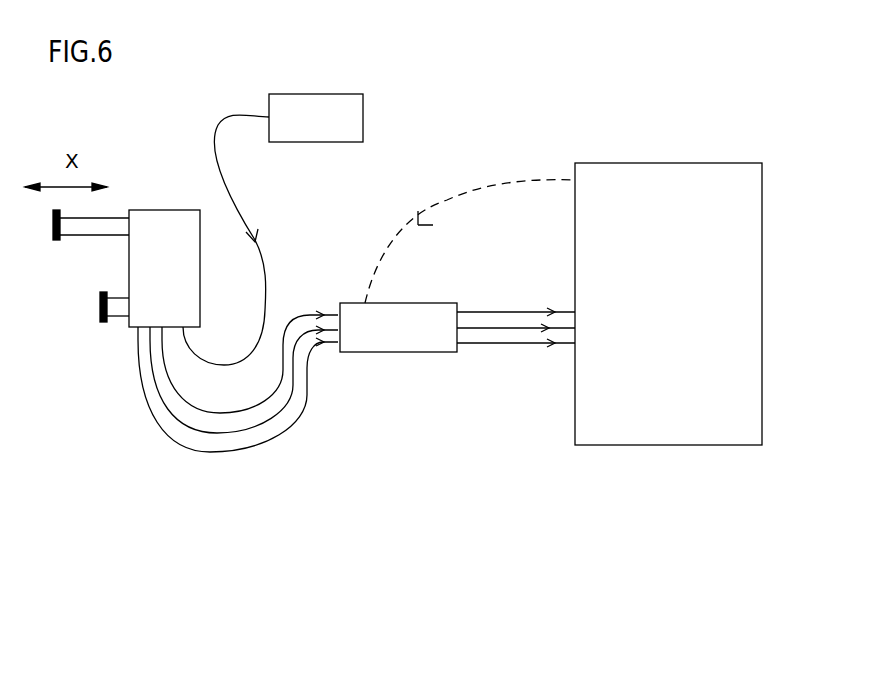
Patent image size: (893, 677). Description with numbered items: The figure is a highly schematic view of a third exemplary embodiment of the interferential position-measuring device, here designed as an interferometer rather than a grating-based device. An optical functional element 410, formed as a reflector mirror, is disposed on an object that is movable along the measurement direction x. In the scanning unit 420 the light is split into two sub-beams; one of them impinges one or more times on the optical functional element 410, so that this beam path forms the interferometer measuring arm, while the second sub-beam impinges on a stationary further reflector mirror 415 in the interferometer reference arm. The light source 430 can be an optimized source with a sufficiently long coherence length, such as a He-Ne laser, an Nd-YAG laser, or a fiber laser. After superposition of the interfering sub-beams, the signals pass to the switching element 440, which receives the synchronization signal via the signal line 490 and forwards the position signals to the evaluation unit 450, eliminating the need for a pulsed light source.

The optical functional element 410 is at (53, 240).
The further reflector mirror 415 is at (98, 312).
The scanning unit 420 is at (180, 223).
The light source 430 is at (345, 103).
The switching element 440 is at (402, 343).
The evaluation unit 450 is at (707, 433).
The signal line 490 is at (473, 190).